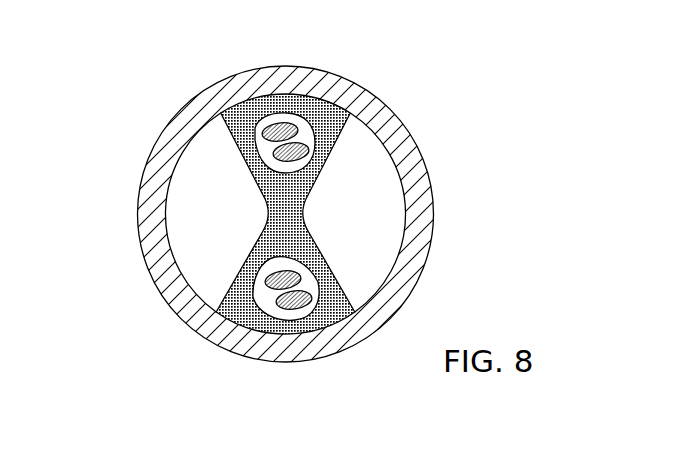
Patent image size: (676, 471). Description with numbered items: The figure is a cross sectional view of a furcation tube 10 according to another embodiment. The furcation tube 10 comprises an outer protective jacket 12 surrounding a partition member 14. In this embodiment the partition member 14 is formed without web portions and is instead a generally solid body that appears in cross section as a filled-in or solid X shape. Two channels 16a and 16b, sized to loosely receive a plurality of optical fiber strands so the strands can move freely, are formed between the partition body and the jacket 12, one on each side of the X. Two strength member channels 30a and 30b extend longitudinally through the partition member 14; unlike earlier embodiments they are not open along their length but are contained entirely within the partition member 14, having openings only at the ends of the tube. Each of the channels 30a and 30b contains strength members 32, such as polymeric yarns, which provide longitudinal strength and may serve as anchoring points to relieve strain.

The furcation tube 10 is at (338, 235).
The protective jacket 12 is at (428, 250).
The partition member 14 is at (222, 128).
The channel 16a is at (186, 238).
The channel 16b is at (371, 262).
The strength member channel 30a is at (311, 130).
The strength member channel 30b is at (258, 291).
The strength members 32 is at (293, 124).